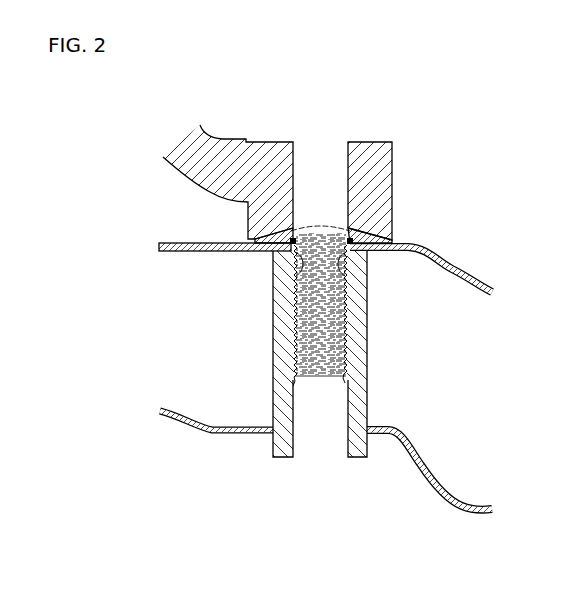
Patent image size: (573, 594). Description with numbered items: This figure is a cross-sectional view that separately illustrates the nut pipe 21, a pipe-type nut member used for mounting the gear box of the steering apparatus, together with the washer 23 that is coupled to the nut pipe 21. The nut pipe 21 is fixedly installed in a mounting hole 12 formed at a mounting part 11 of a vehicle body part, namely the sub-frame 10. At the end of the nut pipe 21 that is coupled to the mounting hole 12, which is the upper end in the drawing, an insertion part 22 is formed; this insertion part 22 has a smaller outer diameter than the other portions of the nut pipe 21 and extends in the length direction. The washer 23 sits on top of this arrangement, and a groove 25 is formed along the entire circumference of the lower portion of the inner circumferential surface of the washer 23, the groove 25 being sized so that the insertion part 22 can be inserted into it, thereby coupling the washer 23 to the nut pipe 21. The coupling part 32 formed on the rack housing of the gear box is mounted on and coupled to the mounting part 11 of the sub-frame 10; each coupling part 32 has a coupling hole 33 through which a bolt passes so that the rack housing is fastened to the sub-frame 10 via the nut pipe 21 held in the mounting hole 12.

The sub-frame 10 is at (422, 477).
The mounting part 11 is at (410, 243).
The mounting hole 12 is at (348, 267).
The nut pipe 21 is at (367, 378).
The insertion part 22 is at (306, 241).
The washer 23 is at (365, 237).
The groove 25 is at (295, 274).
The coupling part 32 is at (248, 220).
The coupling hole 33 is at (347, 180).